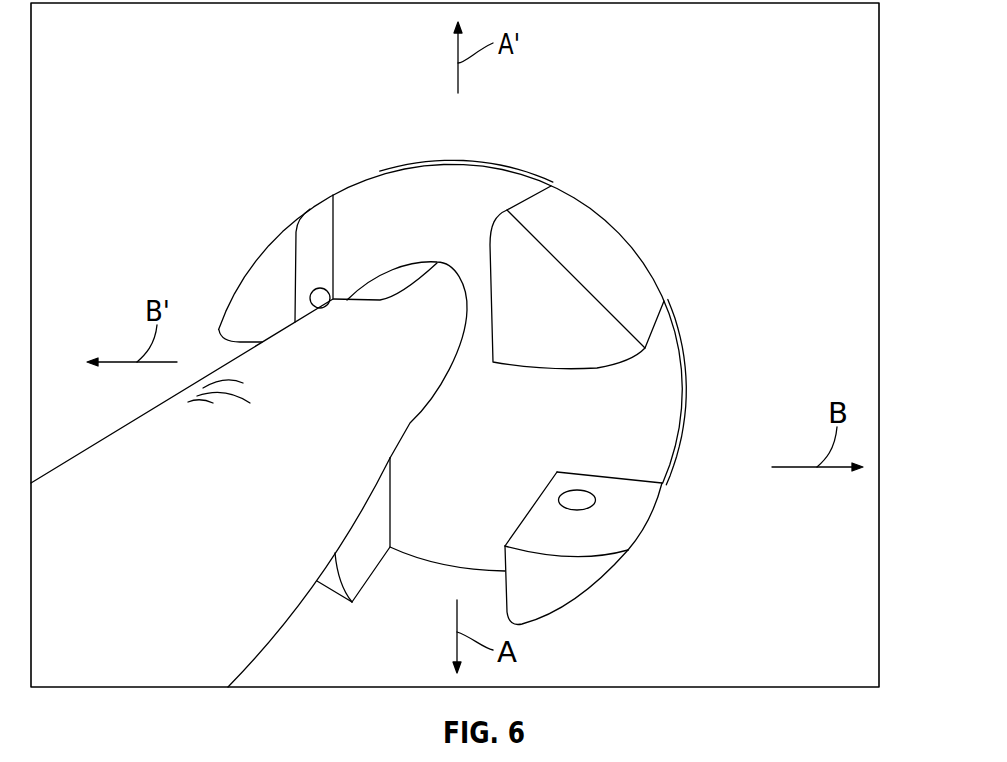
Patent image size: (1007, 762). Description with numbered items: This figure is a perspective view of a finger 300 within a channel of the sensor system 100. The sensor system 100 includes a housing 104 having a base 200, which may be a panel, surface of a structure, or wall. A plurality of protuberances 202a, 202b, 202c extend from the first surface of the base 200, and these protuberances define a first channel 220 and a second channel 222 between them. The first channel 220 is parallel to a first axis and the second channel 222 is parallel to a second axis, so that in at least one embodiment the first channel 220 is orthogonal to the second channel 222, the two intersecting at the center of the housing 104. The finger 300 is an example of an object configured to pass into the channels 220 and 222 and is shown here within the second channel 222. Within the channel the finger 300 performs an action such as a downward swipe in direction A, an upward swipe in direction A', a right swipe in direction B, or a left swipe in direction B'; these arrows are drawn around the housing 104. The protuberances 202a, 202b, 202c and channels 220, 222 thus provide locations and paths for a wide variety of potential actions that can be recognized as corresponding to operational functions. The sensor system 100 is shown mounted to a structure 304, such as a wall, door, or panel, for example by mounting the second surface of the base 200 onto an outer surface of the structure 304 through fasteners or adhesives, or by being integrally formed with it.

The sensor system 100 is at (240, 168).
The housing 104 is at (668, 283).
The base 200 is at (505, 167).
The protuberance 202a is at (323, 203).
The protuberance 202b is at (575, 223).
The protuberance 202c is at (623, 542).
The first channel 220 is at (660, 415).
The second channel 222 is at (452, 200).
The finger 300 is at (117, 432).
The structure 304 is at (833, 202).